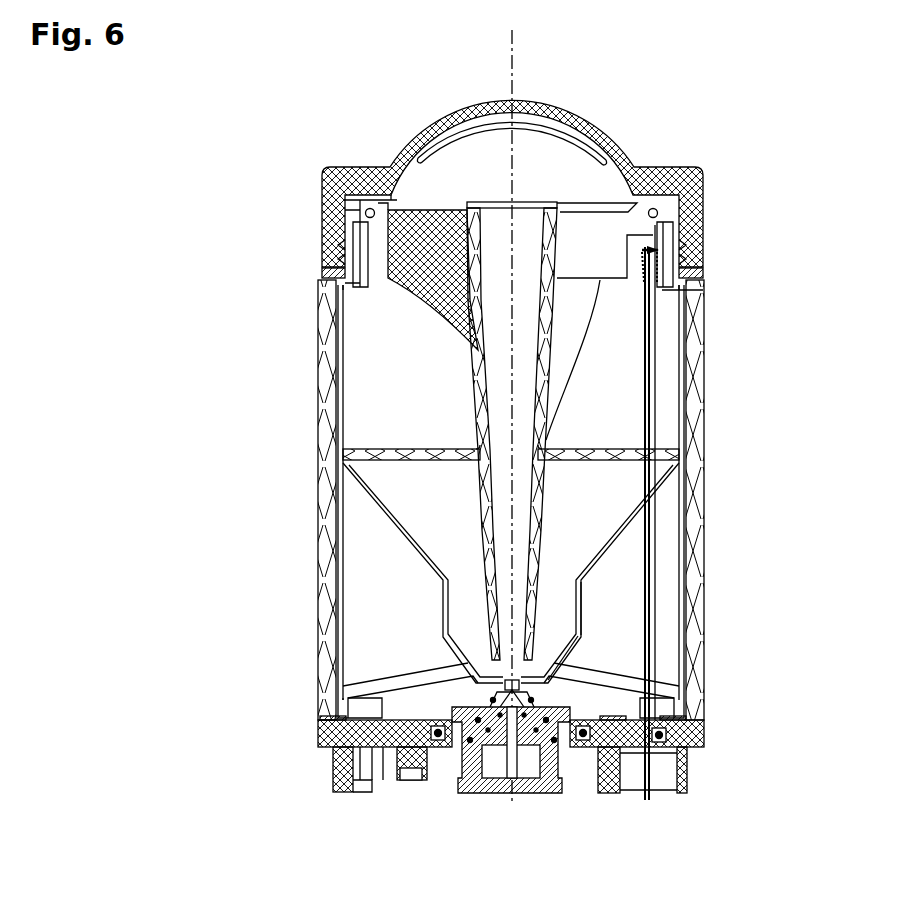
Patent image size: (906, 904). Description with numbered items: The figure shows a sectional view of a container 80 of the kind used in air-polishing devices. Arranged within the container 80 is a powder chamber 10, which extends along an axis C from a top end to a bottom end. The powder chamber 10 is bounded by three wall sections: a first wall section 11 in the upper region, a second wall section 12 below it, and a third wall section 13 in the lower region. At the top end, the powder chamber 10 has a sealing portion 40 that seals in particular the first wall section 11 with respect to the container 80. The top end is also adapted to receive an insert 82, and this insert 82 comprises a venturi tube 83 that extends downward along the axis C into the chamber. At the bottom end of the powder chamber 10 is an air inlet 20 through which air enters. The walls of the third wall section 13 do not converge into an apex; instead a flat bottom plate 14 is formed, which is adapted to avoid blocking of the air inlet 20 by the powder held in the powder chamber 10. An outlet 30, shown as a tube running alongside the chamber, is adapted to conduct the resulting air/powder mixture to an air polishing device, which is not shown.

The powder chamber 10 is at (609, 428).
The first wall section 11 is at (652, 497).
The second wall section 12 is at (584, 610).
The third wall section 13 is at (578, 660).
The flat bottom plate 14 is at (535, 673).
The air inlet 20 is at (484, 672).
The outlet 30 is at (650, 640).
The sealing portion 40 is at (324, 454).
The container 80 is at (320, 282).
The insert 82 is at (398, 431).
The venturi tube 83 is at (467, 343).
The axis C is at (515, 156).